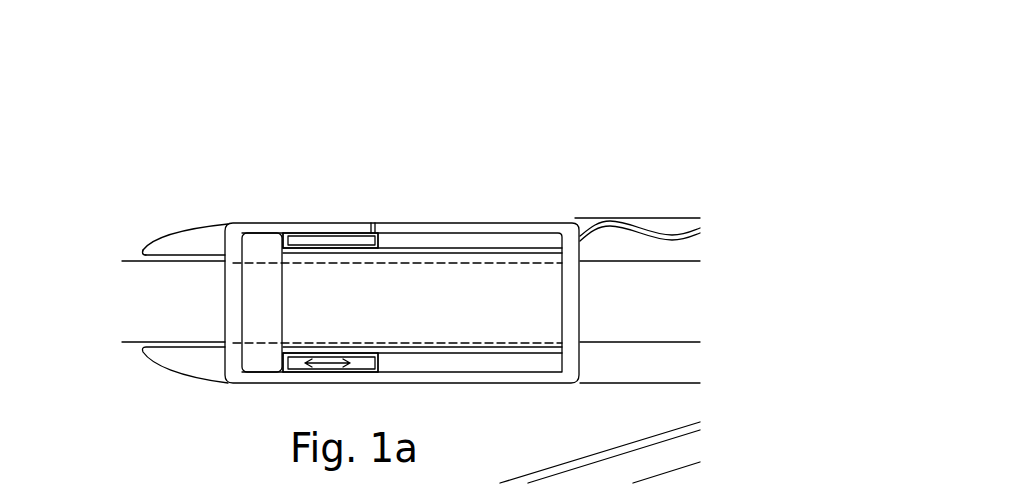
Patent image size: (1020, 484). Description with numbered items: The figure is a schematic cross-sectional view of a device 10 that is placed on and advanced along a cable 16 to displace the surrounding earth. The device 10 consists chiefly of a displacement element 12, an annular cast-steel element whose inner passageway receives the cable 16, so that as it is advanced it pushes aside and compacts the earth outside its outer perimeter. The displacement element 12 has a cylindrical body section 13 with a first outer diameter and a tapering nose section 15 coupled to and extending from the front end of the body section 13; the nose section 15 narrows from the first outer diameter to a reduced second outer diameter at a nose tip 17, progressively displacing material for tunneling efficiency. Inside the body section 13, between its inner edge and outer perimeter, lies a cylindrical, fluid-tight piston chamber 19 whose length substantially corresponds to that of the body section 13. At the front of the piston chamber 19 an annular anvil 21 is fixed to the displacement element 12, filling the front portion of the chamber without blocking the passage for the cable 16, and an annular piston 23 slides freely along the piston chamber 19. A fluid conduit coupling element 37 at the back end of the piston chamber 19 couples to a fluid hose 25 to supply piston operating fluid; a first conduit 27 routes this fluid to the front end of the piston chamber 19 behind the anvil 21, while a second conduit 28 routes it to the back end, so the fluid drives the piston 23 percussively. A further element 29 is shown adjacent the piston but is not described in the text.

The device 10 is at (549, 74).
The displacement element 12 is at (282, 223).
The body section 13 is at (462, 231).
The nose section 15 is at (198, 225).
The cable 16 is at (663, 300).
The nose tip 17 is at (146, 251).
The piston chamber 19 is at (527, 245).
The anvil 21 is at (268, 328).
The piston 23 is at (358, 247).
The fluid hose 25 is at (645, 222).
The first conduit 27 is at (480, 380).
The second conduit 28 is at (572, 222).
The connector 29 is at (377, 233).
The fluid conduit coupling element 37 is at (572, 222).